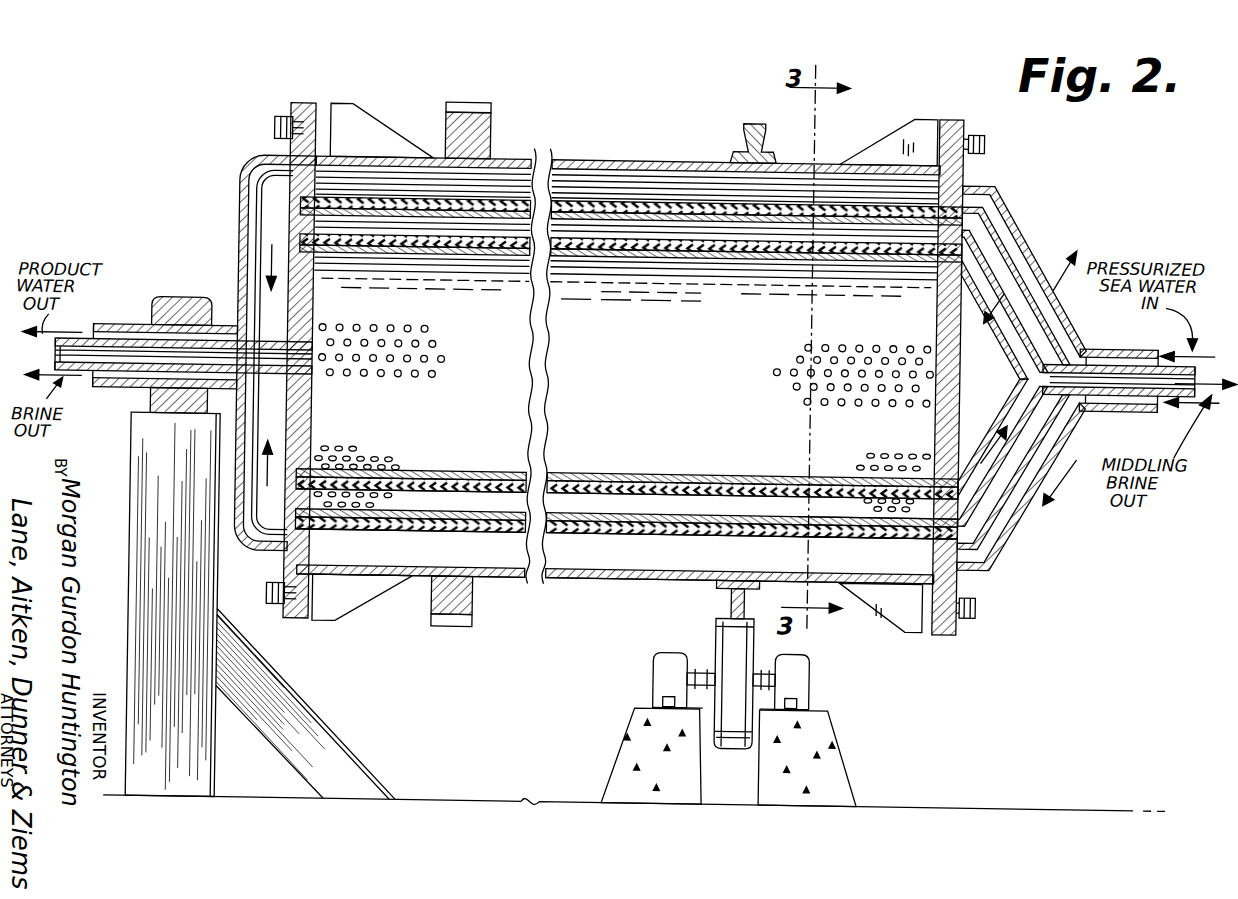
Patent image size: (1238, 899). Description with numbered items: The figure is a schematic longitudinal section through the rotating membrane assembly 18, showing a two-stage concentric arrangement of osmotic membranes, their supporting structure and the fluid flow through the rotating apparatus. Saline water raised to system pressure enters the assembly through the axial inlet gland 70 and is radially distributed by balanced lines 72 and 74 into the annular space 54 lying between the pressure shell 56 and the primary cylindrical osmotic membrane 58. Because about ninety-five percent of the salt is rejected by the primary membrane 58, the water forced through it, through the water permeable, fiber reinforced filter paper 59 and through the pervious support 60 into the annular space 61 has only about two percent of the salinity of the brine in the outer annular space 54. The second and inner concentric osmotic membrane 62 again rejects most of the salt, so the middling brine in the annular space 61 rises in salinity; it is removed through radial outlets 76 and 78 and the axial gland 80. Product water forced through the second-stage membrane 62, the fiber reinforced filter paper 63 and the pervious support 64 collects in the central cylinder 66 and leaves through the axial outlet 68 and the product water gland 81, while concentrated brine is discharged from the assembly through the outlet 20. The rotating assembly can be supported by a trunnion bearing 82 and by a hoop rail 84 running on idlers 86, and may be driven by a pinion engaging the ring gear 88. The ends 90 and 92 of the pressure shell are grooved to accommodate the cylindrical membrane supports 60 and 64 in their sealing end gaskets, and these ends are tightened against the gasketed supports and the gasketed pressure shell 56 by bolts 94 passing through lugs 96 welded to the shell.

The rotating membrane assembly 18 is at (626, 158).
The outlet 20 is at (260, 172).
The annular space 54 is at (678, 188).
The pressure shell 56 is at (565, 580).
The primary cylindrical osmotic membrane 58 is at (748, 536).
The fiber reinforced filter paper 59 is at (842, 533).
The pervious support 60 is at (620, 514).
The annular space 61 is at (650, 508).
The second and inner concentric osmotic membrane 62 is at (768, 496).
The fiber reinforced filter paper 63 is at (670, 493).
The pervious support 64 is at (703, 474).
The central cylinder 66 is at (628, 372).
The axial outlet 68 is at (320, 378).
The axial inlet gland 70 is at (1121, 344).
The balanced line 72 is at (1005, 540).
The balanced line 74 is at (1016, 233).
The radial outlet 76 is at (1005, 515).
The radial outlet 78 is at (1010, 266).
The axial gland 80 is at (1140, 373).
The product water gland 81 is at (122, 347).
The trunnion bearing 82 is at (171, 304).
The hoop rail 84 is at (728, 593).
The idlers 86 is at (718, 635).
The ring gear 88 is at (450, 629).
The end of the pressure shell 90 is at (296, 237).
The end of the pressure shell 92 is at (962, 362).
The bolts 94 is at (978, 134).
The lugs 96 is at (893, 128).